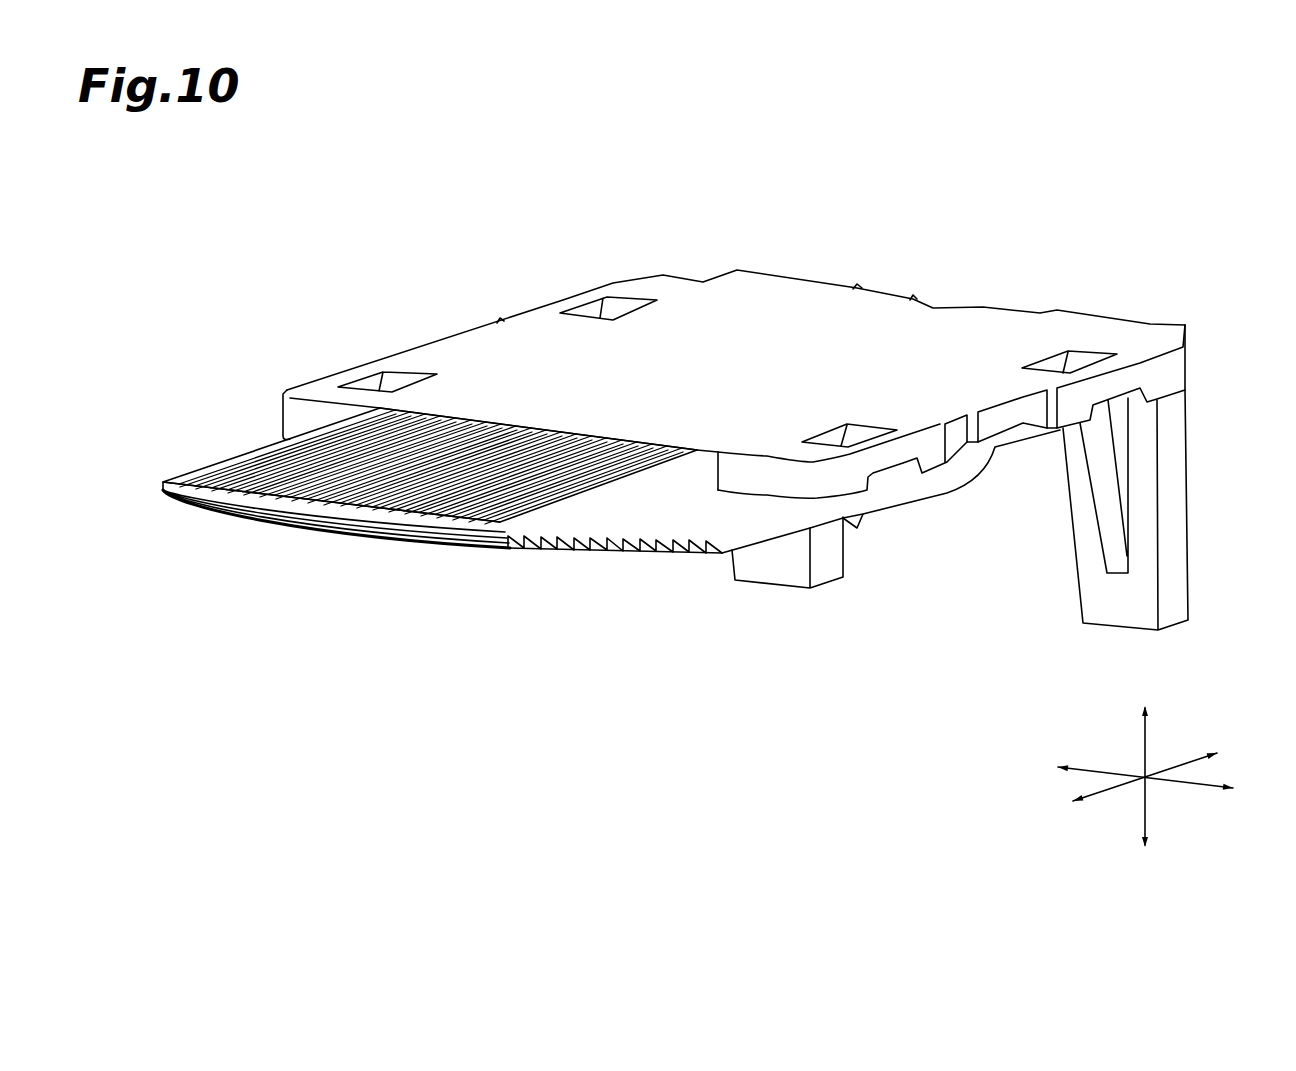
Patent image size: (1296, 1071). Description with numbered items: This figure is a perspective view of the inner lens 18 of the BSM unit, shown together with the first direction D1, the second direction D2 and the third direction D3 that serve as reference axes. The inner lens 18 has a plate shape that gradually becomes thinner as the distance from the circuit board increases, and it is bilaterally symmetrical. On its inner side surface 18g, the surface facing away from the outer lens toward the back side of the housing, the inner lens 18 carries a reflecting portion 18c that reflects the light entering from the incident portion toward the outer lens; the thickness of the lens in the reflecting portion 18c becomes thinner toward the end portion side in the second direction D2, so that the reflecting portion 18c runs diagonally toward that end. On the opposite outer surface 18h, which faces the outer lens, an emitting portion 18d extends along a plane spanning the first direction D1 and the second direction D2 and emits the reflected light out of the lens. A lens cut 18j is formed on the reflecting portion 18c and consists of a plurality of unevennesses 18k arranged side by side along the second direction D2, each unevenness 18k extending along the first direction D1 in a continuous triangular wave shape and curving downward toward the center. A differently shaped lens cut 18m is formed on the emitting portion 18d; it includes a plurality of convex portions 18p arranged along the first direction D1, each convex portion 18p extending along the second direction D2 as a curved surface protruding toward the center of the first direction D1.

The inner lens 18 is at (905, 243).
The outer surface 18h is at (465, 337).
The lens cut 18m is at (337, 440).
The convex portion 18p is at (410, 413).
The emitting portion 18d is at (245, 457).
The reflecting portion 18c is at (537, 560).
The unevenness 18k is at (610, 558).
The lens cut 18j is at (668, 560).
The inner side surface 18g is at (770, 537).
The first direction D1 is at (1198, 778).
The second direction D2 is at (1115, 792).
The third direction D3 is at (1148, 802).